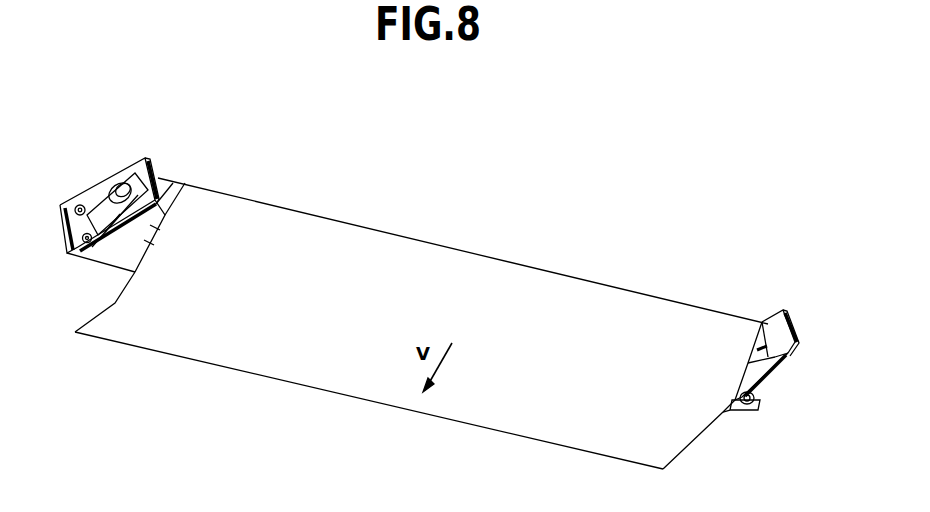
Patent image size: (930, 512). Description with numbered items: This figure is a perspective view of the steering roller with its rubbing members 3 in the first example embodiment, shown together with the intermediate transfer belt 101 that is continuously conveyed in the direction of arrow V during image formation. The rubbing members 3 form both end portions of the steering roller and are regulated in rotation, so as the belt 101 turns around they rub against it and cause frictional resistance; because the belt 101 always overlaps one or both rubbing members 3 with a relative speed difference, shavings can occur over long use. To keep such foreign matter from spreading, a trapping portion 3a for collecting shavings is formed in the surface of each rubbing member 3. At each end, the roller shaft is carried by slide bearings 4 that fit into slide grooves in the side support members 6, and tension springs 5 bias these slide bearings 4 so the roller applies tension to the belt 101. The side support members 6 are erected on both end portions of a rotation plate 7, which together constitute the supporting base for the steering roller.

The intermediate transfer belt 101 is at (290, 372).
The rubbing members 3 is at (157, 190).
The trapping portion 3a is at (176, 190).
The slide bearings 4 is at (131, 172).
The tension springs 5 is at (90, 205).
The side support members 6 is at (110, 265).
The rotation plate 7 is at (730, 412).